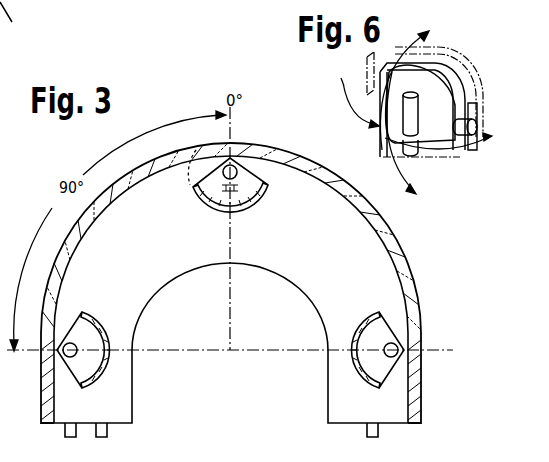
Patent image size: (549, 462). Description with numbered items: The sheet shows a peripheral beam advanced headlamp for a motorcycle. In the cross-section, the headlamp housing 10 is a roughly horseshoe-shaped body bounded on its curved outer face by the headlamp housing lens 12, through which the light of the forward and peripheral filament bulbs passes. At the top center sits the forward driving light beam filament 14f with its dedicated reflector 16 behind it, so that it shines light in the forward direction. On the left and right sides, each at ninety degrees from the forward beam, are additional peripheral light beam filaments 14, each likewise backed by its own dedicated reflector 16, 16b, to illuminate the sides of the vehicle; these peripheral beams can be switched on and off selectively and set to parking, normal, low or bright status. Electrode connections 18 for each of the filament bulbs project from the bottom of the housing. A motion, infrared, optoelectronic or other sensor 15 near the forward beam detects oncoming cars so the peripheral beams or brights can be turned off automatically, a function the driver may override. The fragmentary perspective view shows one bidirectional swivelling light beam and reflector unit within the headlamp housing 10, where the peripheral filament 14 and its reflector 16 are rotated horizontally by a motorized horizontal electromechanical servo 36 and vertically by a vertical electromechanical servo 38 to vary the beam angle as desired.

In FIG. 3, the headlamp housing 10 is at (326, 251).
In FIG. 6, the headlamp housing 10 is at (448, 138).
In FIG. 3, the lens 12 is at (403, 256).
In FIG. 3, the peripheral light beam filament 14 is at (64, 360).
In FIG. 6, the peripheral light beam filament 14 is at (417, 97).
In FIG. 3, the forward driving light beam filament 14f is at (240, 166).
In FIG. 3, the sensor 15 is at (197, 150).
In FIG. 3, the reflector 16 is at (267, 183).
In FIG. 6, the reflector 16 is at (440, 80).
In FIG. 3, the segment / pocket arc (side) 16b is at (81, 383).
In FIG. 3, the electrode connections 18 is at (77, 435).
In FIG. 6, the horizontal electromechanical servo 36 is at (422, 195).
In FIG. 6, the vertical electromechanical servo 38 is at (481, 101).